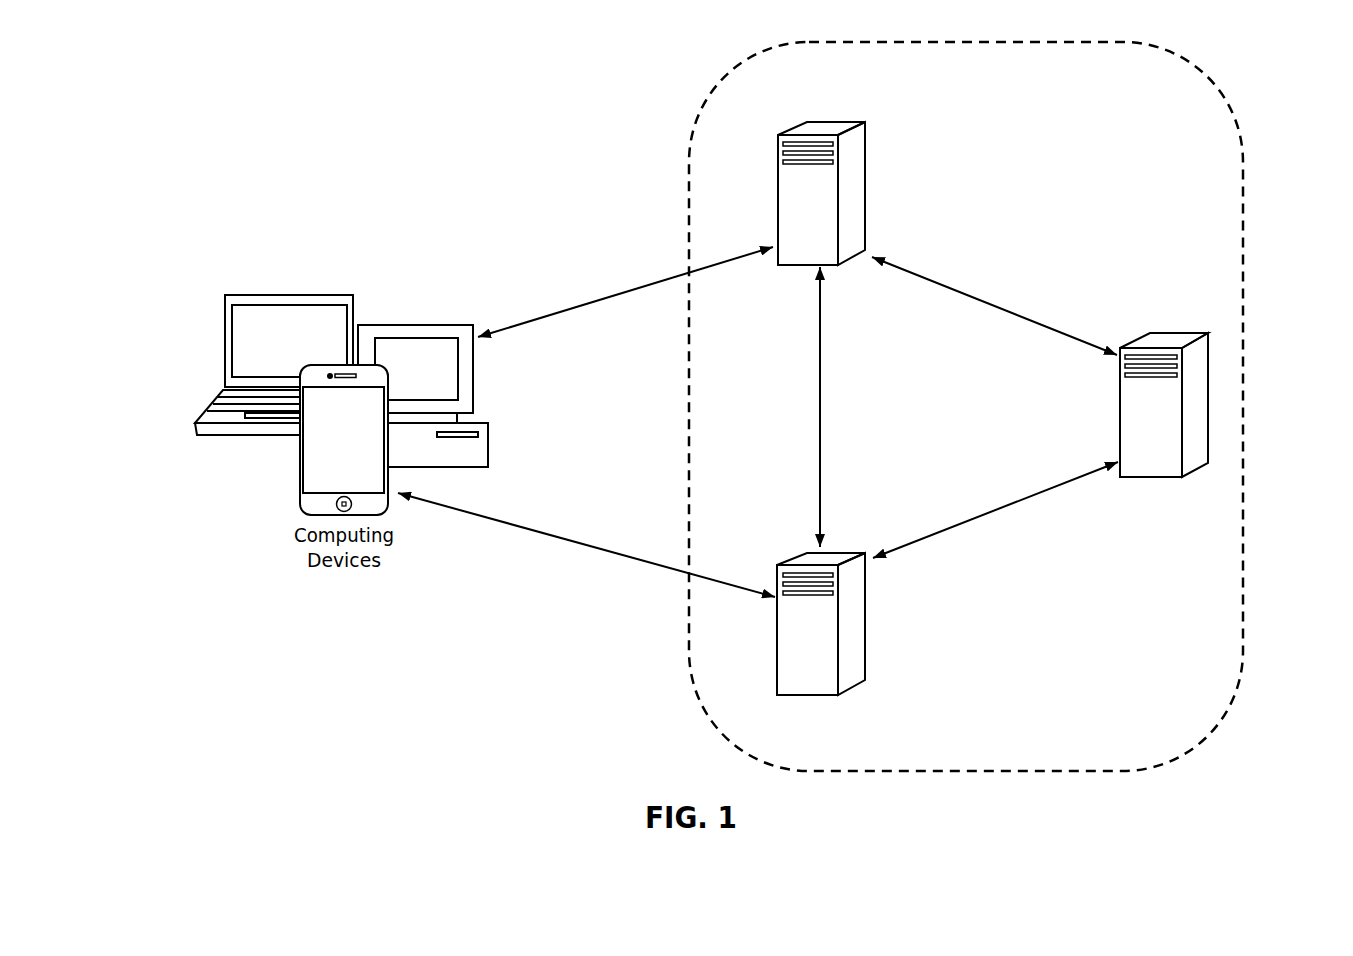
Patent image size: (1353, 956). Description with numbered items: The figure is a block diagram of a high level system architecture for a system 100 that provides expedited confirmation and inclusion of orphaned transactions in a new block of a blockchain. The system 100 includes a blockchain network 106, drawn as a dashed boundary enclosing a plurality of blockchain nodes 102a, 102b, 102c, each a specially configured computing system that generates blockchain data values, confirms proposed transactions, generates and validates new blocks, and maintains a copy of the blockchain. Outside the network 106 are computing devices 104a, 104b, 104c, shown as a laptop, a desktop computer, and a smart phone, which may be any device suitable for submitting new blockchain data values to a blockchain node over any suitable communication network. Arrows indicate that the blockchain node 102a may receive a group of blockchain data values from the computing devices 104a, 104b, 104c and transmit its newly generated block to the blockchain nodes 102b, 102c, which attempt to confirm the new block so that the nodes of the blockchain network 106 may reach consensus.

The system 100 is at (193, 70).
The blockchain node 102a is at (868, 160).
The blockchain node 102b is at (867, 593).
The blockchain node 102c is at (1163, 333).
The computing device 104a is at (250, 293).
The computing device 104b is at (417, 325).
The computing device 104c is at (300, 467).
The blockchain network 106 is at (929, 406).